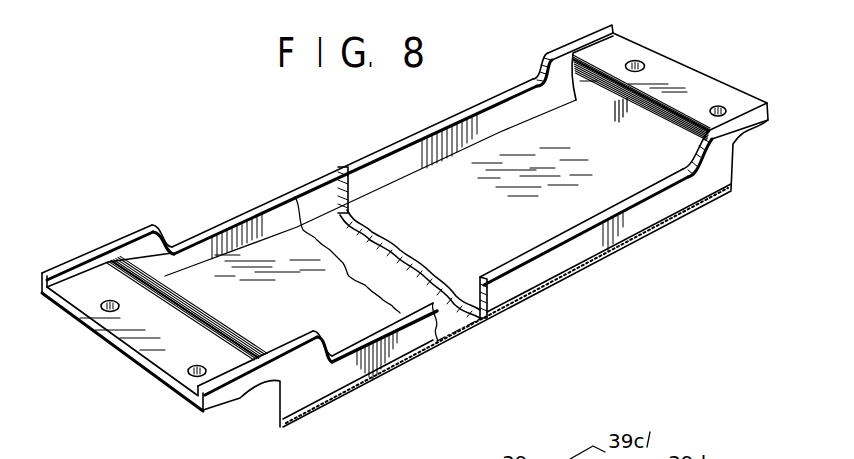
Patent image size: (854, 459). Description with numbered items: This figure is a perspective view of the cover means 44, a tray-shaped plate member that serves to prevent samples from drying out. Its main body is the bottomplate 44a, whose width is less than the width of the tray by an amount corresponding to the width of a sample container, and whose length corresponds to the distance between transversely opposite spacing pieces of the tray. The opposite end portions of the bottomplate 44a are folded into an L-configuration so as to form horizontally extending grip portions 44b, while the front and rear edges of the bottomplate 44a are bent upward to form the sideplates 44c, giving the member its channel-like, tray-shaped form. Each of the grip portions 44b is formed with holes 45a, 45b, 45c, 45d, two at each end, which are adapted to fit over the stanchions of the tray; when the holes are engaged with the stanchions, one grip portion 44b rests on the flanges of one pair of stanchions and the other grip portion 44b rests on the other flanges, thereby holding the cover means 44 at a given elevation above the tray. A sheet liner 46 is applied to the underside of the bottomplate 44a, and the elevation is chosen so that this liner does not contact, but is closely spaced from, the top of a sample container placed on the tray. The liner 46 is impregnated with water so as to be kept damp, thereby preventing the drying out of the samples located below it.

The cover means 44 is at (266, 205).
The bottomplate 44a is at (493, 147).
The grip portions 44b is at (152, 339).
The sideplates 44c is at (398, 167).
The hole 45a is at (193, 377).
The hole 45b is at (106, 311).
The hole 45c is at (725, 108).
The hole 45d is at (642, 61).
The sheet liner 46 is at (633, 240).